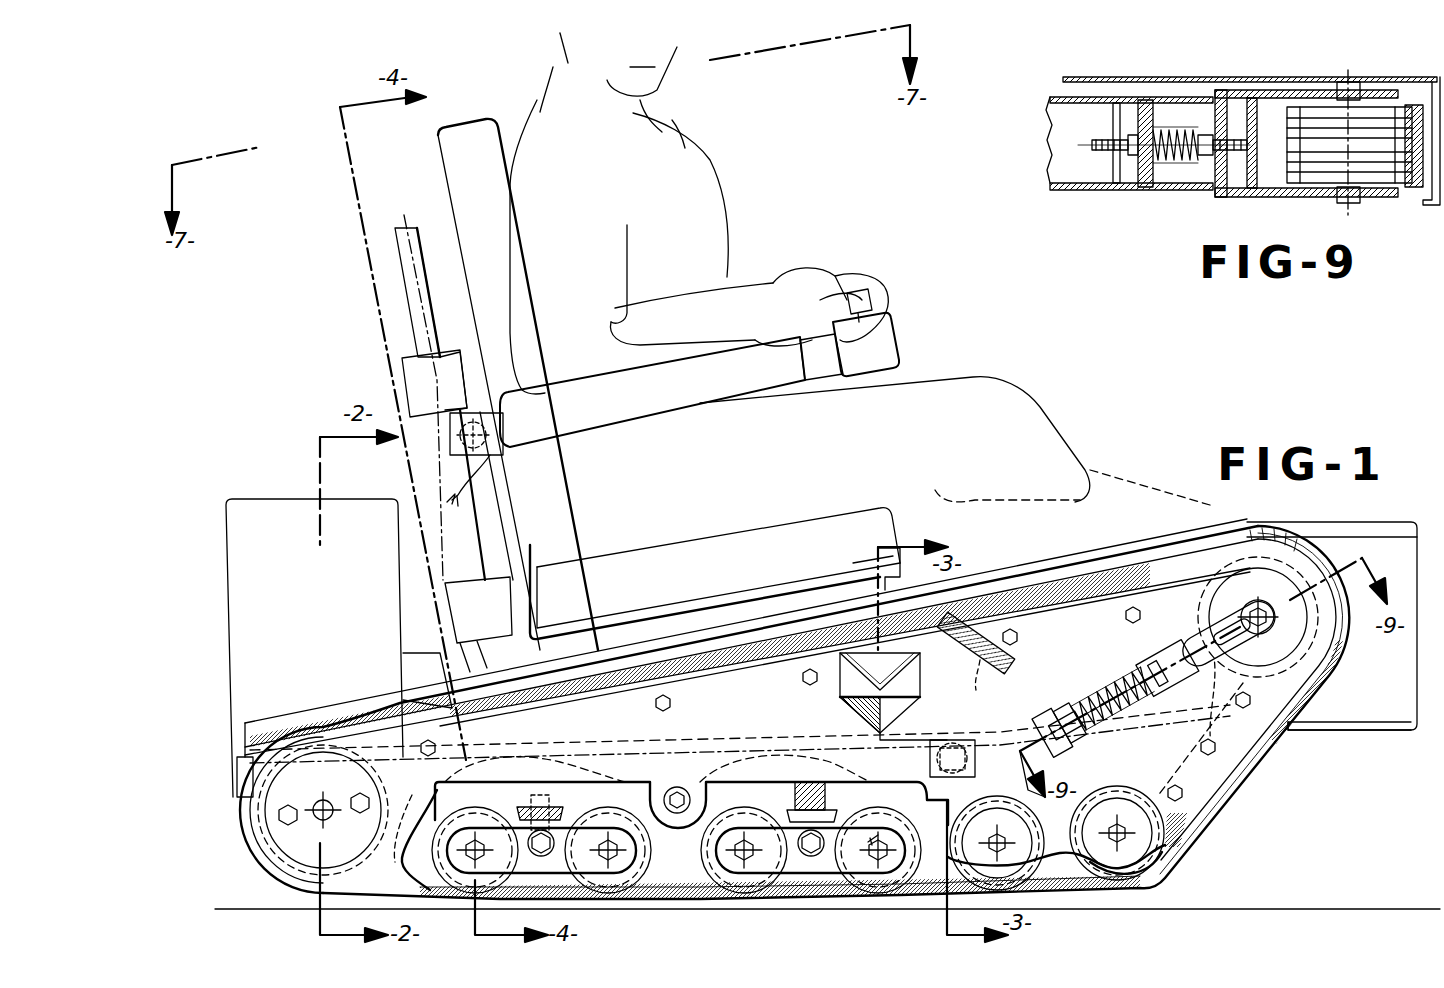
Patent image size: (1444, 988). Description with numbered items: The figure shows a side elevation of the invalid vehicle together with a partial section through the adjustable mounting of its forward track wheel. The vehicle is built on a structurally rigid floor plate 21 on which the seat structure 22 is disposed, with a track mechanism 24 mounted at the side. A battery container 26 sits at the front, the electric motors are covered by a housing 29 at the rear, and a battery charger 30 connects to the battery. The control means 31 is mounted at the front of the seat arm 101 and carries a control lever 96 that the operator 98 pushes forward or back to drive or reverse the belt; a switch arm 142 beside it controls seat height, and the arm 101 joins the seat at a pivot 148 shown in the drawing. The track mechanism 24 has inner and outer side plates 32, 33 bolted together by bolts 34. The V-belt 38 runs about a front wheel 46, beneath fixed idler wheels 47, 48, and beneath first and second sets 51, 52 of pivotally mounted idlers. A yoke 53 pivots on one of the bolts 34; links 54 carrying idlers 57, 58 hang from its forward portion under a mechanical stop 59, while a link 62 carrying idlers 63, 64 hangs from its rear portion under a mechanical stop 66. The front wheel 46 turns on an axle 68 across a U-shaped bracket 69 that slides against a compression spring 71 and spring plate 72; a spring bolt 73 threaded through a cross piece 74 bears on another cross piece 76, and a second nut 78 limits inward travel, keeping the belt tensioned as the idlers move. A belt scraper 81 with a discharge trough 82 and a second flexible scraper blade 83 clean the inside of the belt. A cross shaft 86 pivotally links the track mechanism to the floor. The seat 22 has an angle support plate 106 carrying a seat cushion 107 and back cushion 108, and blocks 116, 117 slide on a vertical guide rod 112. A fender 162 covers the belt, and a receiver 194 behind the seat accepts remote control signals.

In FIG. 1, the floor plate 21 is at (1348, 729).
In FIG. 1, the seat structure 22 is at (365, 348).
In FIG. 1, the track mechanism 24 is at (220, 786).
In FIG. 1, the battery container 26 is at (1370, 520).
In FIG. 1, the motor housing 29 is at (233, 572).
In FIG. 1, the battery charger 30 is at (1215, 790).
In FIG. 1, the control means 31 is at (904, 332).
In FIG. 9, the side plate 32 is at (1070, 97).
In FIG. 1, the side plate 33 is at (1076, 670).
In FIG. 9, the side plate 33 is at (1080, 192).
In FIG. 1, the bolts 34 is at (672, 704).
In FIG. 1, the V-belt 38 is at (256, 860).
In FIG. 9, the V-belt 38 is at (1416, 188).
In FIG. 1, the front wheel 46 is at (1208, 621).
In FIG. 9, the front wheel 46 is at (1412, 105).
In FIG. 1, the fixed idler wheel 47 is at (1147, 872).
In FIG. 1, the fixed idler wheel 48 is at (1042, 870).
In FIG. 1, the first set of pivotally mounted idler wheels 51 is at (812, 910).
In FIG. 1, the second set of pivotally mounted idler wheels 52 is at (660, 910).
In FIG. 1, the yoke 53 is at (765, 733).
In FIG. 1, the links 54 is at (868, 835).
In FIG. 1, the idler wheel 57 is at (876, 893).
In FIG. 1, the idler wheel 58 is at (738, 892).
In FIG. 1, the mechanical stop 59 is at (830, 808).
In FIG. 1, the link 62 is at (560, 830).
In FIG. 1, the idler wheel 63 is at (436, 783).
In FIG. 1, the idler wheel 64 is at (652, 860).
In FIG. 1, the mechanical stop 66 is at (533, 806).
In FIG. 9, the axle 68 is at (1348, 82).
In FIG. 1, the U-shaped bracket 69 is at (1182, 681).
In FIG. 9, the U-shaped bracket 69 is at (1247, 190).
In FIG. 1, the compression spring 71 is at (1113, 691).
In FIG. 9, the compression spring 71 is at (1178, 165).
In FIG. 1, the spring plate 72 is at (1109, 741).
In FIG. 9, the spring plate 72 is at (1143, 188).
In FIG. 1, the spring bolt 73 is at (1085, 695).
In FIG. 9, the spring bolt 73 is at (1092, 145).
In FIG. 9, the cross piece 74 is at (1112, 168).
In FIG. 1, the cross piece 76 is at (1185, 719).
In FIG. 9, the second nut 78 is at (1203, 158).
In FIG. 1, the belt scraper 81 is at (985, 672).
In FIG. 1, the discharge trough 82 is at (912, 686).
In FIG. 1, the second flexible scraper blade 83 is at (372, 822).
In FIG. 1, the cross shaft 86 is at (958, 778).
In FIG. 1, the control lever 96 is at (862, 290).
In FIG. 1, the operator 98 is at (730, 186).
In FIG. 1, the seat arm 101 is at (658, 410).
In FIG. 1, the angle support plate 106 is at (698, 604).
In FIG. 1, the seat cushion 107 is at (862, 508).
In FIG. 1, the back cushion 108 is at (498, 126).
In FIG. 1, the vertical guide rod 112 is at (416, 228).
In FIG. 1, the block 116 is at (405, 385).
In FIG. 1, the block 117 is at (514, 602).
In FIG. 1, the switch arm 142 is at (818, 275).
In FIG. 1, the armrest pivot 148 is at (505, 422).
In FIG. 1, the fender 162 is at (1180, 545).
In FIG. 9, the fender 162 is at (1192, 77).
In FIG. 1, the receiver 194 is at (405, 672).